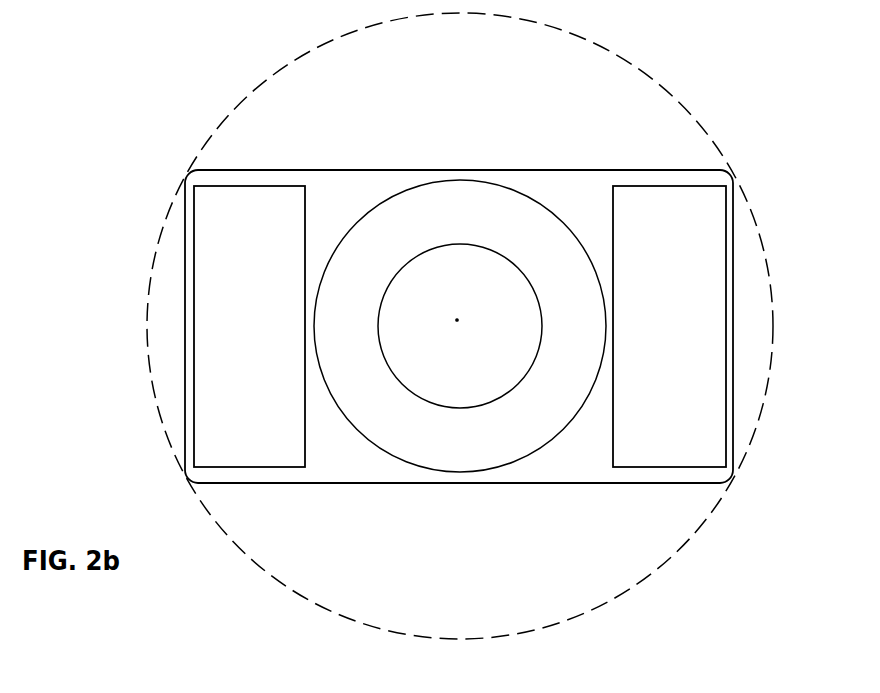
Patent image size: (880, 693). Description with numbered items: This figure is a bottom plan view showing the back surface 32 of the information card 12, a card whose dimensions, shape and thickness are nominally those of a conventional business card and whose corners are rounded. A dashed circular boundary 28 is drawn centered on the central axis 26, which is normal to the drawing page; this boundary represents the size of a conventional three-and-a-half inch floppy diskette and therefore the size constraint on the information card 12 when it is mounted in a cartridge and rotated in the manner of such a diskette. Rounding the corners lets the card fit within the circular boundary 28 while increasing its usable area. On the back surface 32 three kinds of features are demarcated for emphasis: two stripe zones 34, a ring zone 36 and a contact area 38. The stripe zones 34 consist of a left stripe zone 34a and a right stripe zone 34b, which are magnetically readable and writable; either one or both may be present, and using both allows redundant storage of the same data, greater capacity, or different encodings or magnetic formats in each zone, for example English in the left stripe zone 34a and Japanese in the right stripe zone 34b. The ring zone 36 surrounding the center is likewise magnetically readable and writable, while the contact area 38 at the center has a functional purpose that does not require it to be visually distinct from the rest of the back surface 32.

The circular boundary 28 is at (576, 33).
The information card 12 is at (459, 170).
The central axis 26 is at (457, 320).
The back surface 32 is at (460, 324).
The stripe zones 34 is at (460, 326).
The left stripe zone 34a is at (273, 352).
The right stripe zone 34b is at (693, 352).
The ring zone 36 is at (475, 447).
The contact area 38 is at (475, 378).